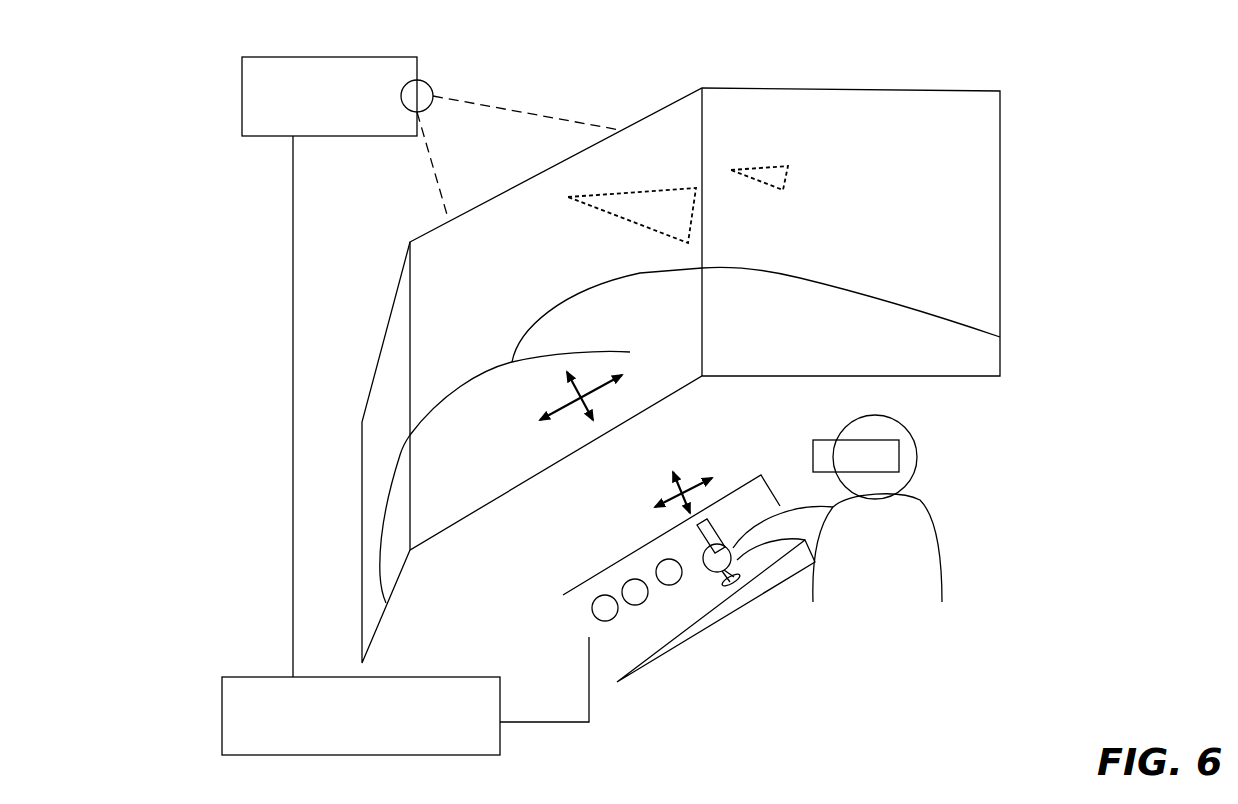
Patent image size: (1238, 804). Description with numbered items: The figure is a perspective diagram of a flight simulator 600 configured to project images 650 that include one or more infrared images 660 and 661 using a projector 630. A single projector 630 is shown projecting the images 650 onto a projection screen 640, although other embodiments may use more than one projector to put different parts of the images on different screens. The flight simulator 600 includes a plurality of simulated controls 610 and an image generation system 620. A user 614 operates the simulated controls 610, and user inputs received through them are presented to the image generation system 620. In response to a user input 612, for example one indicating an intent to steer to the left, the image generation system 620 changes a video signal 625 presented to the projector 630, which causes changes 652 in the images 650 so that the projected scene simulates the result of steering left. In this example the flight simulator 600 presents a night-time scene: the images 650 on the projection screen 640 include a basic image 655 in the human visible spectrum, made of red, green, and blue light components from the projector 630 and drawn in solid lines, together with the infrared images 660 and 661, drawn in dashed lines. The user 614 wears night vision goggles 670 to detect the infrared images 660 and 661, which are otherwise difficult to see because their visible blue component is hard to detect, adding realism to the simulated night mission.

The flight simulator 600 is at (97, 63).
The simulated controls 610 is at (712, 624).
The user input 612 is at (678, 463).
The user 614 is at (930, 527).
The image generation system 620 is at (458, 677).
The video signal 625 is at (293, 385).
The projector 630 is at (338, 57).
The projection screen 640 is at (1000, 139).
The images 650 is at (494, 328).
The changes in images 652 is at (560, 425).
The basic image 655 is at (897, 296).
The infrared image 660 is at (672, 190).
The infrared image 661 is at (769, 166).
The night vision goggles 670 is at (833, 440).